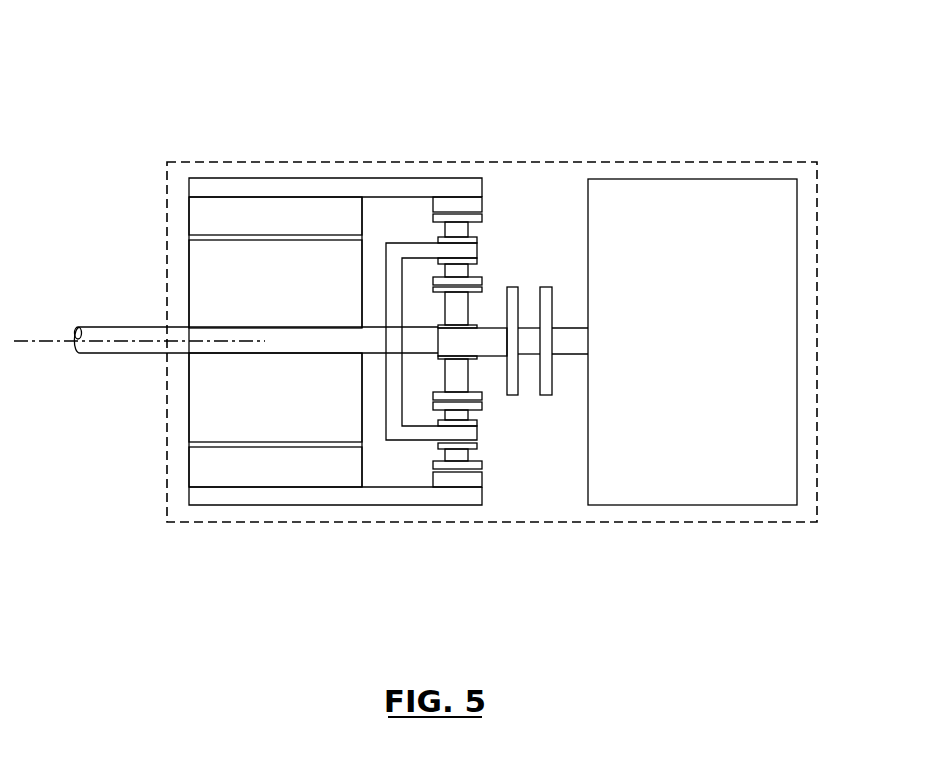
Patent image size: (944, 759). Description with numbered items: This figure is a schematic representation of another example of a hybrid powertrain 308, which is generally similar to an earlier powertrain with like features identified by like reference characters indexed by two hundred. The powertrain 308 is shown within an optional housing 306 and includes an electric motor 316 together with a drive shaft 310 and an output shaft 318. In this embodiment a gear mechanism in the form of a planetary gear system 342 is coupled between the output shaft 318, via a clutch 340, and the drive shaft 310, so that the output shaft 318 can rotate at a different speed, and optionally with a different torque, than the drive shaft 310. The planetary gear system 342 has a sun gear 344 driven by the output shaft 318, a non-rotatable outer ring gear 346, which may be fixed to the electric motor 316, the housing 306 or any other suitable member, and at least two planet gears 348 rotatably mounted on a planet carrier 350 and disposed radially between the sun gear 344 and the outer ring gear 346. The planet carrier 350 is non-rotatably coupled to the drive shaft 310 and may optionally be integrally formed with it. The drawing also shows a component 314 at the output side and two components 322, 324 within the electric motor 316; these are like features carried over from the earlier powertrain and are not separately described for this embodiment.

The housing 306 is at (268, 162).
The powertrain 308 is at (482, 137).
The drive shaft 310 is at (101, 348).
The driven device 314 is at (777, 273).
The electric motor 316 is at (270, 493).
The output shaft 318 is at (569, 338).
The stator 322 is at (200, 212).
The rotor 324 is at (200, 275).
The clutch 340 is at (528, 389).
The planetary gear system 342 is at (419, 228).
The sun gear 344 is at (467, 314).
The outer ring gear 346 is at (475, 206).
The planet gears 348 is at (472, 232).
The planet carrier 350 is at (402, 435).